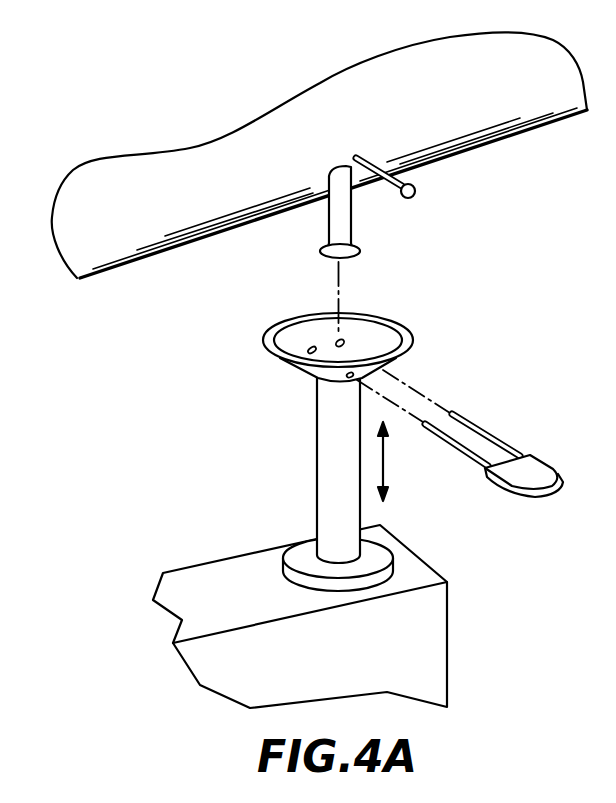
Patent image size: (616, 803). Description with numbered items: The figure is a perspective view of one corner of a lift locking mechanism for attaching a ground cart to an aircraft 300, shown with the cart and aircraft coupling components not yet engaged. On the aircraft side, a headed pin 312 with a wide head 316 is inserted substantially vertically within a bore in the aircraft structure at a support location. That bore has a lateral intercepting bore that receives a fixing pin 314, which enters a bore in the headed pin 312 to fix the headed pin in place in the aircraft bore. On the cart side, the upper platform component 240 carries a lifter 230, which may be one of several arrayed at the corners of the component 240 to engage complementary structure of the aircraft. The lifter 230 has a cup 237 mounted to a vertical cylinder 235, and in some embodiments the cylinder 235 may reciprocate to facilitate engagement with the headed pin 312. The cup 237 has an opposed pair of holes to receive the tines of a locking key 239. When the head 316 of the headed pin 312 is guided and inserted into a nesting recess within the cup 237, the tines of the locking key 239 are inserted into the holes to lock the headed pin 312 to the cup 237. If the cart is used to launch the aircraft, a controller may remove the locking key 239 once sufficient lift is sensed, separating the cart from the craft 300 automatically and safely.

The aircraft 300 is at (548, 125).
The headed pin 312 is at (345, 212).
The fixing pin 314 is at (411, 193).
The wide head 316 is at (327, 246).
The cup 237 is at (408, 334).
The lifter 230 is at (447, 375).
The vertical cylinder 235 is at (327, 458).
The locking key 239 is at (542, 472).
The upper platform component 240 is at (438, 623).